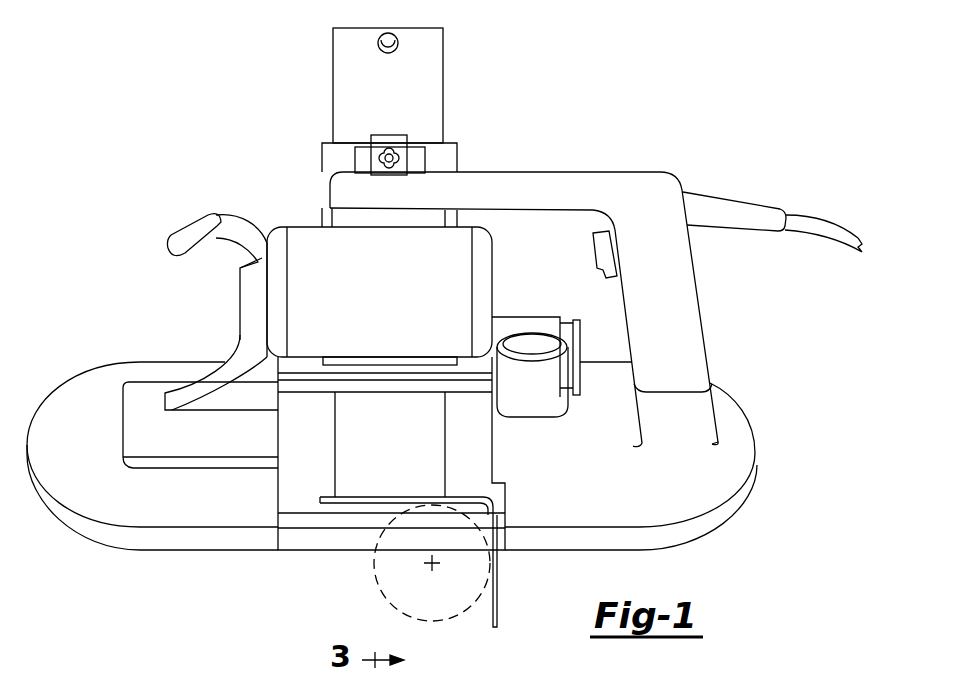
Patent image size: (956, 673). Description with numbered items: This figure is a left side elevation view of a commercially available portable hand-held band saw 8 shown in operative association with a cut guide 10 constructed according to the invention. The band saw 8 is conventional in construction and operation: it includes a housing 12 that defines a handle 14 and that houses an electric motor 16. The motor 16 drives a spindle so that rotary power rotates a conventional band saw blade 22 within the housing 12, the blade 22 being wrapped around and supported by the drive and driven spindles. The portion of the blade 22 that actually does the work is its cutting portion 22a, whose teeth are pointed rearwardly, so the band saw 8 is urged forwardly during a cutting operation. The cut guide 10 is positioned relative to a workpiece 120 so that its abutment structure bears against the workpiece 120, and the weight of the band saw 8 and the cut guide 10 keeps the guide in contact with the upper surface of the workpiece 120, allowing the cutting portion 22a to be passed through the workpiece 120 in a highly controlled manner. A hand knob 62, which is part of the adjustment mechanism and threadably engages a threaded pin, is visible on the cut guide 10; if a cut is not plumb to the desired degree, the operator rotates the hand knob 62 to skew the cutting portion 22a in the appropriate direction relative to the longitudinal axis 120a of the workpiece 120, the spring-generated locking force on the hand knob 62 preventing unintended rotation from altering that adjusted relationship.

The cut guide 10 is at (535, 38).
The hand knob 62 is at (400, 156).
The handle 14 is at (665, 197).
The electric motor 16 is at (455, 277).
The band saw blade 22 is at (388, 385).
The cutting portion 22a is at (318, 530).
The workpiece 120 is at (372, 547).
The longitudinal axis 120a is at (436, 566).
The housing 12 is at (708, 475).
The portable hand-held band saw 8 is at (756, 360).